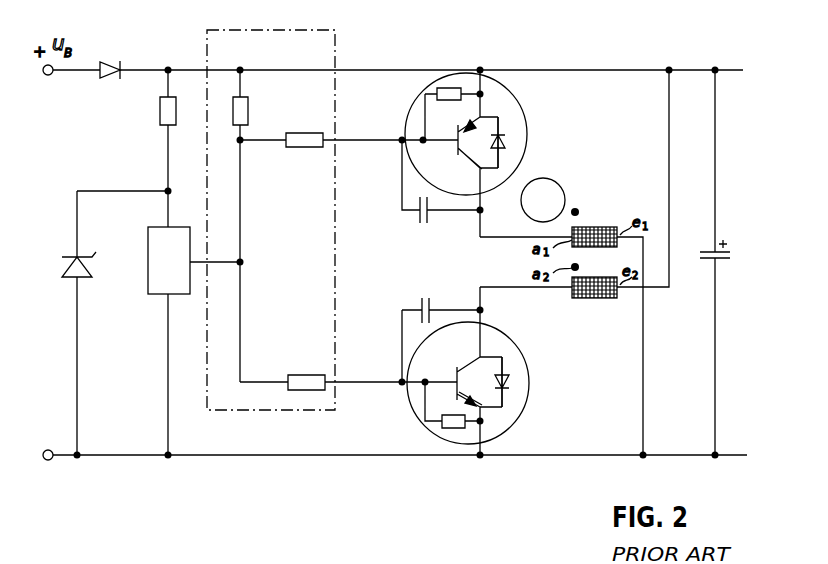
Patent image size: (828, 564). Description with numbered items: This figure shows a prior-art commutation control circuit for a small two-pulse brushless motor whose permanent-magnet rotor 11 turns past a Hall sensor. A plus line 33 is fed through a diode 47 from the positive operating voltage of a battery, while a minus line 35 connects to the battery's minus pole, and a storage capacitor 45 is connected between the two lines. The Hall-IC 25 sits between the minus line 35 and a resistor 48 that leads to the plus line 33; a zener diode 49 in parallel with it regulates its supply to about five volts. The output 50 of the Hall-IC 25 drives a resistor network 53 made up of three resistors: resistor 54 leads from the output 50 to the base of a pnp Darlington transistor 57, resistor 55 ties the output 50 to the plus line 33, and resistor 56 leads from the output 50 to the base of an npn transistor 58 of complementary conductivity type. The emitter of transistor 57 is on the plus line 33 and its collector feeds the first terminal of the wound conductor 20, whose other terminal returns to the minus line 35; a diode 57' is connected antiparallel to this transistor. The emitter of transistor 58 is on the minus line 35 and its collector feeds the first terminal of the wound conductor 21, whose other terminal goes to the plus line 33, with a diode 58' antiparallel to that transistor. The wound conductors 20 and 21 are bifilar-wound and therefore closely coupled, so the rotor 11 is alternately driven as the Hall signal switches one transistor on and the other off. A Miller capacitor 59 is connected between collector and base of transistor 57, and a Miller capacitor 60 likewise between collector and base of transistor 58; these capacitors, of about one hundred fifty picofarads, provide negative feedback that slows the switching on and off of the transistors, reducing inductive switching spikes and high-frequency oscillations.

The permanent magnet rotor 11 is at (550, 181).
The wound conductor 20 is at (596, 227).
The wound conductor 21 is at (598, 299).
The Hall-IC 25 is at (178, 293).
The plus line 33 is at (355, 69).
The minus line 35 is at (548, 456).
The storage capacitor 45 is at (722, 260).
The diode 47 is at (106, 62).
The resistor 48 is at (160, 112).
The zener diode 49 is at (86, 266).
The output 50 is at (243, 262).
The resistor network 53 is at (268, 30).
The resistor 54 is at (305, 147).
The resistor 55 is at (243, 110).
The resistor 56 is at (303, 376).
The pnp Darlington transistor 57 is at (475, 136).
The diode 57' is at (538, 142).
The npn transistor 58 is at (482, 371).
The diode 58' is at (543, 382).
The Miller capacitor 59 is at (415, 222).
The Miller capacitor 60 is at (418, 298).